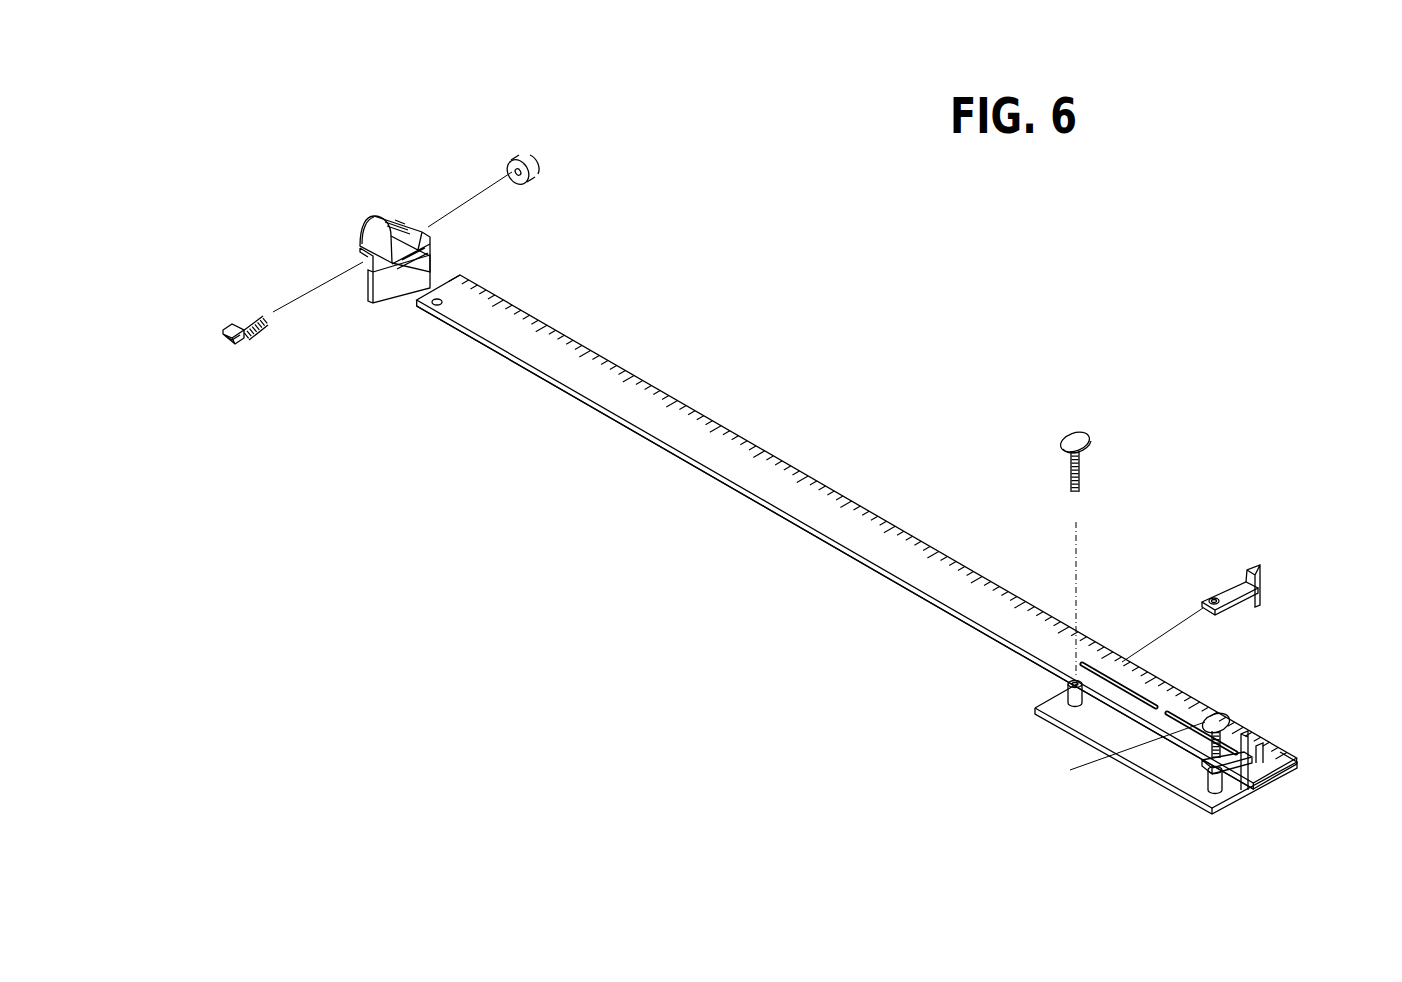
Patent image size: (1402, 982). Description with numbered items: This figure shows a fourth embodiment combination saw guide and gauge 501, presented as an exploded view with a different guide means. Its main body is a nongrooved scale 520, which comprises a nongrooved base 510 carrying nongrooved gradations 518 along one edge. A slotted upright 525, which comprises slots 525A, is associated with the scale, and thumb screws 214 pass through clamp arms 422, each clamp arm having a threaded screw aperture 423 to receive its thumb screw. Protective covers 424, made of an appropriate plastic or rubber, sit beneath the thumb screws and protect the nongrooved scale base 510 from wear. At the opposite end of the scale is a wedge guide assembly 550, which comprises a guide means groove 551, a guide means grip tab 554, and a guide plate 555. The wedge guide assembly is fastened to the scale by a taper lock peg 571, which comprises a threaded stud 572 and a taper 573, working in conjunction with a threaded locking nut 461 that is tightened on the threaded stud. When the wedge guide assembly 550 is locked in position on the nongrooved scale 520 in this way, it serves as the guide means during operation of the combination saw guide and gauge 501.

The thumb screw 214 is at (1082, 425).
The clamp arm 422 is at (1238, 585).
The threaded screw aperture 423 is at (1214, 600).
The protective cover 424 is at (1067, 688).
The threaded locking nut 461 is at (548, 155).
The combination saw guide and gauge 501 is at (663, 450).
The nongrooved base 510 is at (1042, 718).
The nongrooved gradations 518 is at (702, 417).
The nongrooved scale 520 is at (838, 537).
The slotted upright 525 is at (1238, 772).
The slot 525A is at (1110, 682).
The wedge guide assembly 550 is at (397, 222).
The guide means groove 551 is at (417, 255).
The guide means grip tab 554 is at (370, 235).
The guide plate 555 is at (390, 290).
The taper lock peg 571 is at (235, 325).
The threaded stud 572 is at (248, 318).
The taper 573 is at (227, 334).